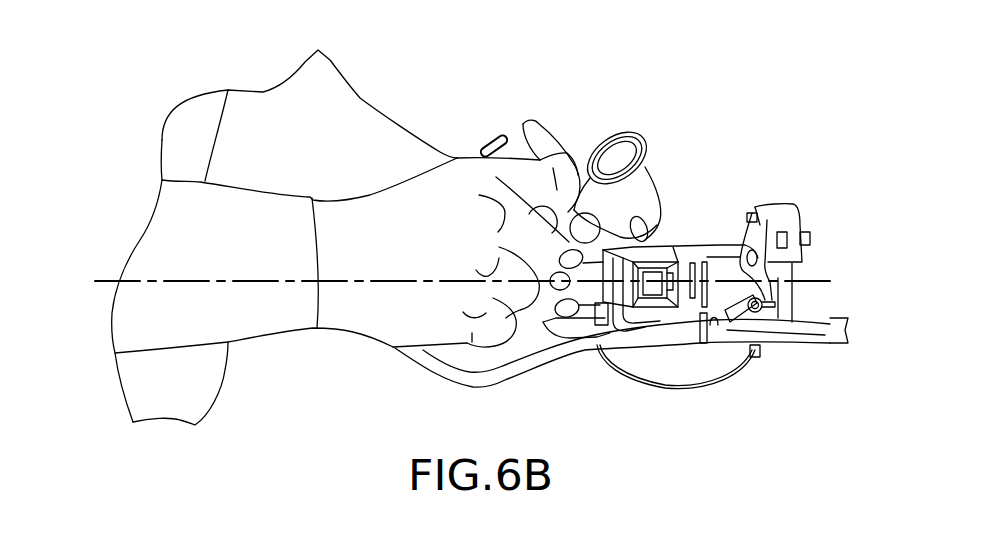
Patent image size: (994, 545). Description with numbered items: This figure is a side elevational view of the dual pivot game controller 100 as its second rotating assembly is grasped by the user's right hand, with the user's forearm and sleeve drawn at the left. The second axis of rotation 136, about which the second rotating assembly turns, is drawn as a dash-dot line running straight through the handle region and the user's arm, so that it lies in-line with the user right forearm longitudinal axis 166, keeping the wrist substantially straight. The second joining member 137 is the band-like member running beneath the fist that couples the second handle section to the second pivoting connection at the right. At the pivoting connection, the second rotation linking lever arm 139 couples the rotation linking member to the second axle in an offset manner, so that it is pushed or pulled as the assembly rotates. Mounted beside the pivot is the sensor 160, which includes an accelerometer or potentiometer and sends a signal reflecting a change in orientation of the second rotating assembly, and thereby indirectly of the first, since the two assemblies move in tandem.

The dual pivot game controller 100 is at (639, 250).
The second axis of rotation 136 is at (718, 246).
The second joining member 137 is at (523, 367).
The second rotation linking lever arm 139 is at (697, 309).
The sensor 160 is at (800, 259).
The user right forearm longitudinal axis 166 is at (233, 281).